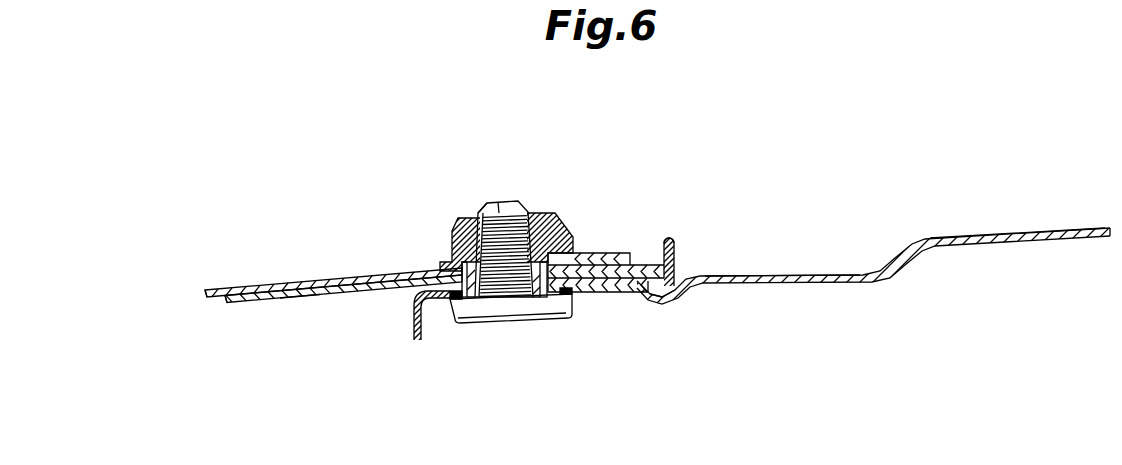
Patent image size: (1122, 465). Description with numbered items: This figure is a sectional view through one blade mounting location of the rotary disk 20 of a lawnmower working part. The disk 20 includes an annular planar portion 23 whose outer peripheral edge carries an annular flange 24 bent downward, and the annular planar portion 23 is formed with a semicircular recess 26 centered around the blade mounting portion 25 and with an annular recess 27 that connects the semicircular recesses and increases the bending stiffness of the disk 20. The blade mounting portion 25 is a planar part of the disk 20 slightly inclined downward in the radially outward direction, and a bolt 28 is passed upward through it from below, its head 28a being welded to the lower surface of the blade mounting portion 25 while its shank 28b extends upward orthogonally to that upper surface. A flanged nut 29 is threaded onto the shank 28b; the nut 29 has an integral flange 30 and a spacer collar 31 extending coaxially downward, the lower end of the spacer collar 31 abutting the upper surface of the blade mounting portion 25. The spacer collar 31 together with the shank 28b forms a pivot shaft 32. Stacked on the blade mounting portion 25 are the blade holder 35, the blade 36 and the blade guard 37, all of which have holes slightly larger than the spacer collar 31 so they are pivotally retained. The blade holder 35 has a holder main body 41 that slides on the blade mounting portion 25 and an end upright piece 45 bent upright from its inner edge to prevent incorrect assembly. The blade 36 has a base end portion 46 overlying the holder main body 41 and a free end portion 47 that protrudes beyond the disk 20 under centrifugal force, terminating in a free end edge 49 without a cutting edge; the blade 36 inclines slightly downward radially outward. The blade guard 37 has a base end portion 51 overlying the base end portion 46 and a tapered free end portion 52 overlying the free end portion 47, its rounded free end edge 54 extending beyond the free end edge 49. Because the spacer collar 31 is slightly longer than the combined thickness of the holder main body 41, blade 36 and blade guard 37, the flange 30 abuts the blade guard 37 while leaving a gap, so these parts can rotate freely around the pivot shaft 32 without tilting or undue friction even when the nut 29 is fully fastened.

The disk 20 is at (836, 227).
The annular planar portion 23 is at (998, 237).
The annular flange 24 is at (412, 328).
The blade mounting portion 25 is at (593, 293).
The semicircular recess 26 is at (822, 276).
The annular recess 27 is at (698, 284).
The bolt 28 is at (511, 350).
The head 28a is at (529, 322).
The shank 28b is at (500, 204).
The nut 29 is at (501, 214).
The flange 30 is at (498, 215).
The spacer collar 31 is at (473, 300).
The pivot shaft 32 is at (484, 210).
The blade holder 35 is at (624, 289).
The blade 36 is at (298, 296).
The blade guard 37 is at (300, 293).
The holder main body 41 is at (445, 265).
The end upright piece 45 is at (667, 231).
The base end portion 46 is at (661, 240).
The free end portion 47 is at (236, 306).
The free end edge 49 is at (215, 302).
The base end portion 51 is at (622, 253).
The free end portion 52 is at (258, 287).
The free end edge 54 is at (208, 293).